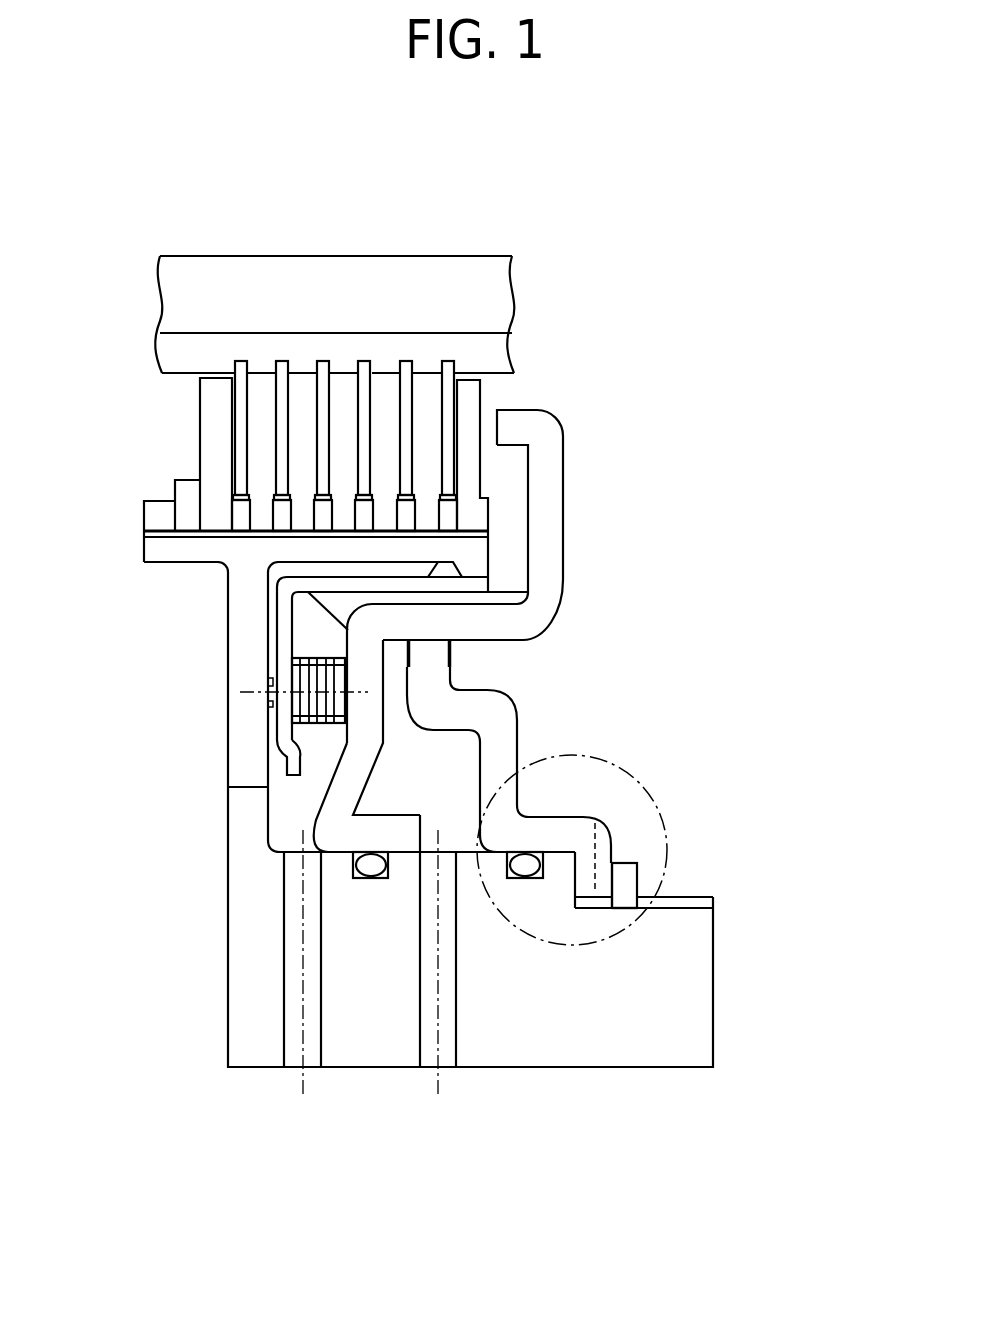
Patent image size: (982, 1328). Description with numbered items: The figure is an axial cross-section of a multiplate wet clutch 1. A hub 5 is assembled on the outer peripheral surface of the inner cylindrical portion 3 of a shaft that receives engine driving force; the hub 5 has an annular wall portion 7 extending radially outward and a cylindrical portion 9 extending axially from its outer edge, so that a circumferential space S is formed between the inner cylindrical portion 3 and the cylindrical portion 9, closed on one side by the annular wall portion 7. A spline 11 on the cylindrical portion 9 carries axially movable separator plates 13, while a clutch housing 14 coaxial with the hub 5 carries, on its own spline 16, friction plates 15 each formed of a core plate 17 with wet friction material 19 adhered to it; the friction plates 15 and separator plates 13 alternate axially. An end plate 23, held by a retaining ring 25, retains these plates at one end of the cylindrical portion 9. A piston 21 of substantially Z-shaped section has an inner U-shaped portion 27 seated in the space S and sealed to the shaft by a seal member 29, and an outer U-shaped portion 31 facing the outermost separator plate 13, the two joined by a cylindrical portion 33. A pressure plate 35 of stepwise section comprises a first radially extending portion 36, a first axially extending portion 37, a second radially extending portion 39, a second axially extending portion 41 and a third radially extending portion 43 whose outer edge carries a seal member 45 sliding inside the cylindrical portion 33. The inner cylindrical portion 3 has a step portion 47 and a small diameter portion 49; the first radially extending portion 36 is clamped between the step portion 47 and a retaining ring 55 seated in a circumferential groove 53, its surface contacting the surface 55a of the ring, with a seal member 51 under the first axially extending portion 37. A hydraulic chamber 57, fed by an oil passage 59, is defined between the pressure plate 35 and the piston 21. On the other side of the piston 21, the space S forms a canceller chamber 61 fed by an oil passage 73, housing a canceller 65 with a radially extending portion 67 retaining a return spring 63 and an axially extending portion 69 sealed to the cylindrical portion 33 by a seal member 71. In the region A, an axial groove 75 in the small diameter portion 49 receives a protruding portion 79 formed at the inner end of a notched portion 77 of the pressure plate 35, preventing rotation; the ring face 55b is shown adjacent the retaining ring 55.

The multiplate wet clutch 1 is at (552, 212).
The inner cylindrical portion 3 is at (527, 1048).
The hub 5 is at (220, 595).
The annular wall portion 7 is at (240, 623).
The cylindrical portion 9 is at (293, 552).
The spline 11 is at (157, 515).
The separator plate 13 is at (260, 395).
The clutch housing 14 is at (220, 280).
The friction plate 15 is at (400, 353).
The spline 16 is at (182, 352).
The core plate 17 is at (282, 367).
The wet friction material 19 is at (230, 370).
The piston 21 is at (586, 425).
The end plate 23 is at (213, 408).
The retaining ring 25 is at (185, 492).
The U-shaped portion 27 is at (388, 728).
The seal member 29 is at (367, 865).
The U-shaped portion 31 is at (565, 565).
The cylindrical portion 33 is at (463, 620).
The pressure plate 35 is at (527, 720).
The first radially extending portion 36 is at (597, 843).
The first axially extending portion 37 is at (553, 825).
The second radially extending portion 39 is at (495, 753).
The second axially extending portion 41 is at (467, 710).
The third radially extending portion 43 is at (437, 675).
The seal member 45 is at (455, 647).
The step portion 47 is at (555, 887).
The small diameter portion 49 is at (682, 1032).
The seal member 51 is at (520, 865).
The circumferential groove 53 is at (623, 905).
The retaining ring 55 is at (703, 916).
The surface axially on one side of the retaining ring 55a is at (598, 870).
The block body 55b is at (637, 873).
The hydraulic chamber 57 is at (403, 792).
The oil passage 59 is at (450, 1050).
The canceller chamber 61 is at (290, 797).
The return spring 63 is at (310, 733).
The canceller 65 is at (287, 648).
The radially extending portion 67 is at (282, 665).
The axially extending portion 69 is at (410, 587).
The seal member 71 is at (472, 592).
The oil passage 73 is at (295, 1052).
The axial groove 75 is at (693, 898).
The notched portion 77 is at (622, 902).
The protruding portion 79 is at (588, 900).
The detail region A is at (660, 803).
The circumferential space S is at (293, 815).